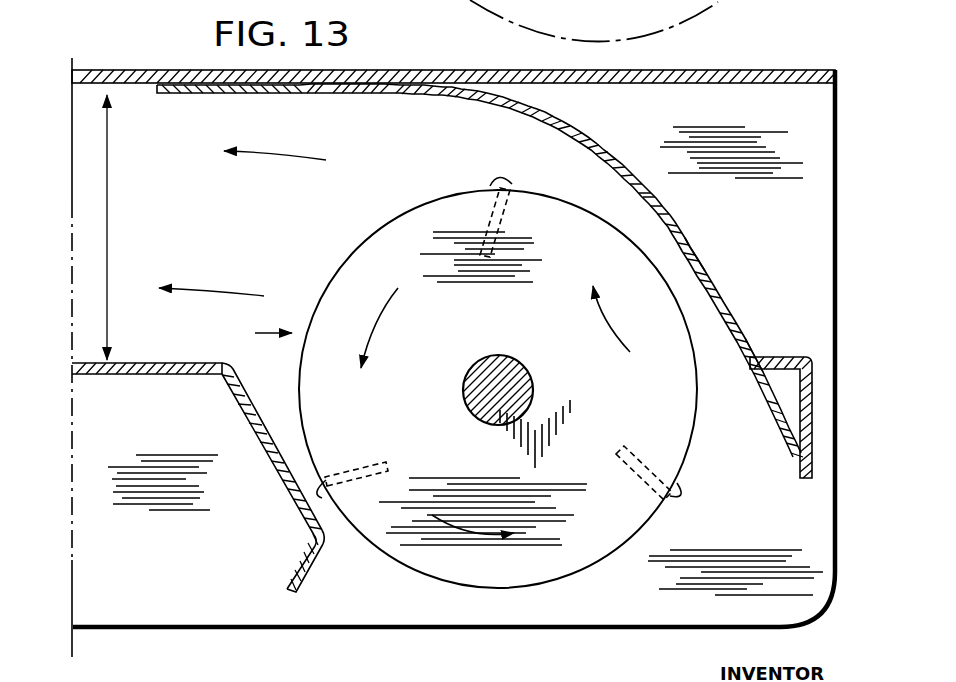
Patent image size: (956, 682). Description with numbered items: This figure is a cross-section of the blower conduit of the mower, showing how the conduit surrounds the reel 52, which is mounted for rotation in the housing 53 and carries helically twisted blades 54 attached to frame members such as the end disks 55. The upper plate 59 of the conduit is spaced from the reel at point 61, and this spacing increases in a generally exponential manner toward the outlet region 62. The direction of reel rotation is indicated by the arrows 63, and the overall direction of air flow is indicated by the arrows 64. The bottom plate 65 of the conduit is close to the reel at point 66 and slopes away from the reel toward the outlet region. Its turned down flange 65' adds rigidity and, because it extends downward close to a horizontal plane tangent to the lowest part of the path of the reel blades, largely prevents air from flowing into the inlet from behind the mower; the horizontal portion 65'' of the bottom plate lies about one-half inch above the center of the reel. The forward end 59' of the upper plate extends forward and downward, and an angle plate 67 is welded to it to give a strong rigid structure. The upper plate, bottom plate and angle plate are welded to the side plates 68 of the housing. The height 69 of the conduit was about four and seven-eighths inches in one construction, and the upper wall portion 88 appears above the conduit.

The reel 52 is at (259, 334).
The housing 53 is at (490, 68).
The blades 54 is at (500, 228).
The end disks 55 is at (362, 246).
The upper plate 59 is at (480, 270).
The forward end of the upper plate 59' is at (776, 342).
The point of spacing of upper plate from reel 61 is at (686, 298).
The outlet region 62 is at (184, 231).
The arrows indicating direction of reel rotation 63 is at (380, 327).
The arrows indicating direction of air flow 64 is at (287, 161).
The bottom plate 65 is at (260, 449).
The turned down flange 65' is at (281, 563).
The horizontal portion 65'' is at (147, 395).
The point of closeness of bottom plate to reel 66 is at (305, 475).
The angle plate 67 is at (810, 404).
The side plates 68 is at (741, 207).
The height 69 is at (110, 216).
The upper housing wall 88 is at (717, 4).